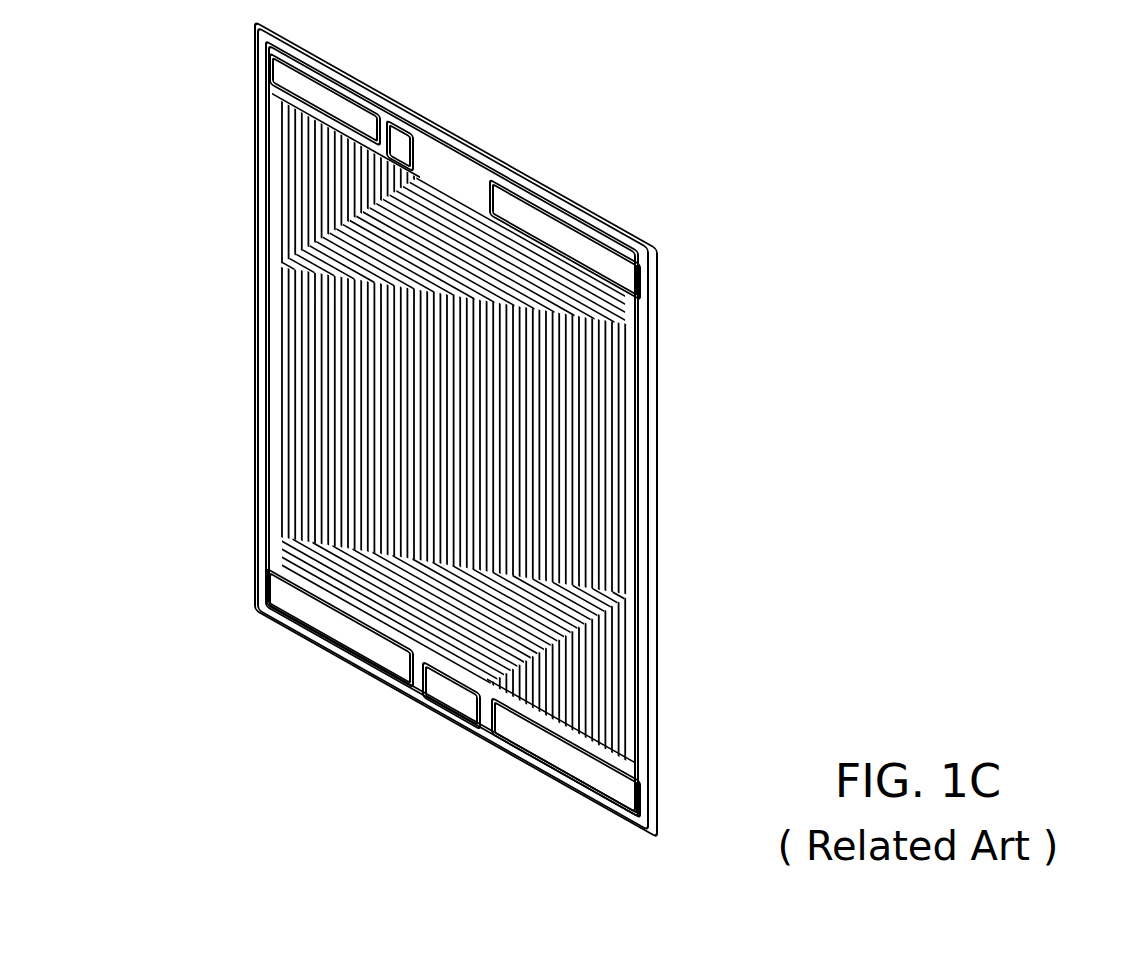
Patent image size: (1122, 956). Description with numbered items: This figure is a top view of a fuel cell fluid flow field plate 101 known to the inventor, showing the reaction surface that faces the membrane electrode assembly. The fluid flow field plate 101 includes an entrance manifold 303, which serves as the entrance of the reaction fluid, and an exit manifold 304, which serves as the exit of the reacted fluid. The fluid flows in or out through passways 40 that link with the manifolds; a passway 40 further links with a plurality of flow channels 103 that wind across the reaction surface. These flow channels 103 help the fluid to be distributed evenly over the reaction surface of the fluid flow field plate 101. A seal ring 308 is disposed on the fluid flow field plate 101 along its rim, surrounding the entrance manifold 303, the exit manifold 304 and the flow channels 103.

The fluid flow field plate 101 is at (909, 152).
The flow channels 103 is at (315, 218).
The entrance manifold 303 is at (348, 110).
The exit manifold 304 is at (548, 746).
The passway 40 is at (392, 163).
The seal ring 308 is at (652, 312).